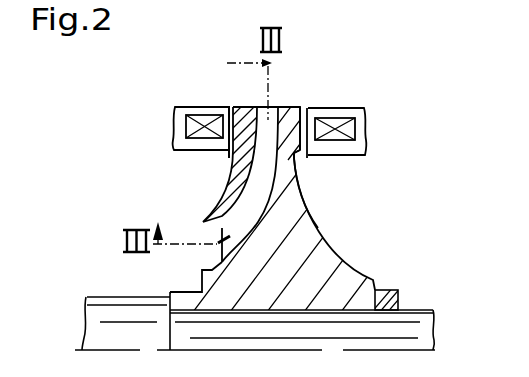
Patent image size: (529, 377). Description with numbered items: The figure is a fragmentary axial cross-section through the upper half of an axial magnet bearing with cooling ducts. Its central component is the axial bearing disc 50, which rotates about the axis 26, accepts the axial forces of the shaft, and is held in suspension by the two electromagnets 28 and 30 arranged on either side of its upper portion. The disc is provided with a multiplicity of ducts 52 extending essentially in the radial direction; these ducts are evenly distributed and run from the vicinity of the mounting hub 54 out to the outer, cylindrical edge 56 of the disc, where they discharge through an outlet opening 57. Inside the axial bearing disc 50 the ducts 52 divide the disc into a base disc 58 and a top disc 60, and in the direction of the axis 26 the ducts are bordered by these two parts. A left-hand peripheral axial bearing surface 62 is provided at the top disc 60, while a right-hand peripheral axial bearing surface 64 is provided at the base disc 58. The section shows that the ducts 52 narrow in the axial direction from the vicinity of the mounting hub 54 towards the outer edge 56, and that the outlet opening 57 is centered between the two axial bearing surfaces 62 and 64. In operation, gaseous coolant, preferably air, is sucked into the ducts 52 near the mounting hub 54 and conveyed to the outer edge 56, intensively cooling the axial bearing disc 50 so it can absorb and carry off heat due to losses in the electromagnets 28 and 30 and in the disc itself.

The axis 26 is at (434, 353).
The electromagnet 28 is at (182, 115).
The electromagnet 30 is at (367, 122).
The axial bearing disc 50 is at (320, 227).
The ducts 52 is at (233, 222).
The mounting hub 54 is at (356, 279).
The outer, cylindrical edge 56 is at (240, 106).
The outlet opening 57 is at (265, 107).
The base disc 58 is at (301, 182).
The top disc 60 is at (232, 180).
The left-hand peripheral axial bearing surface 62 is at (232, 108).
The right-hand peripheral axial bearing surface 64 is at (302, 109).